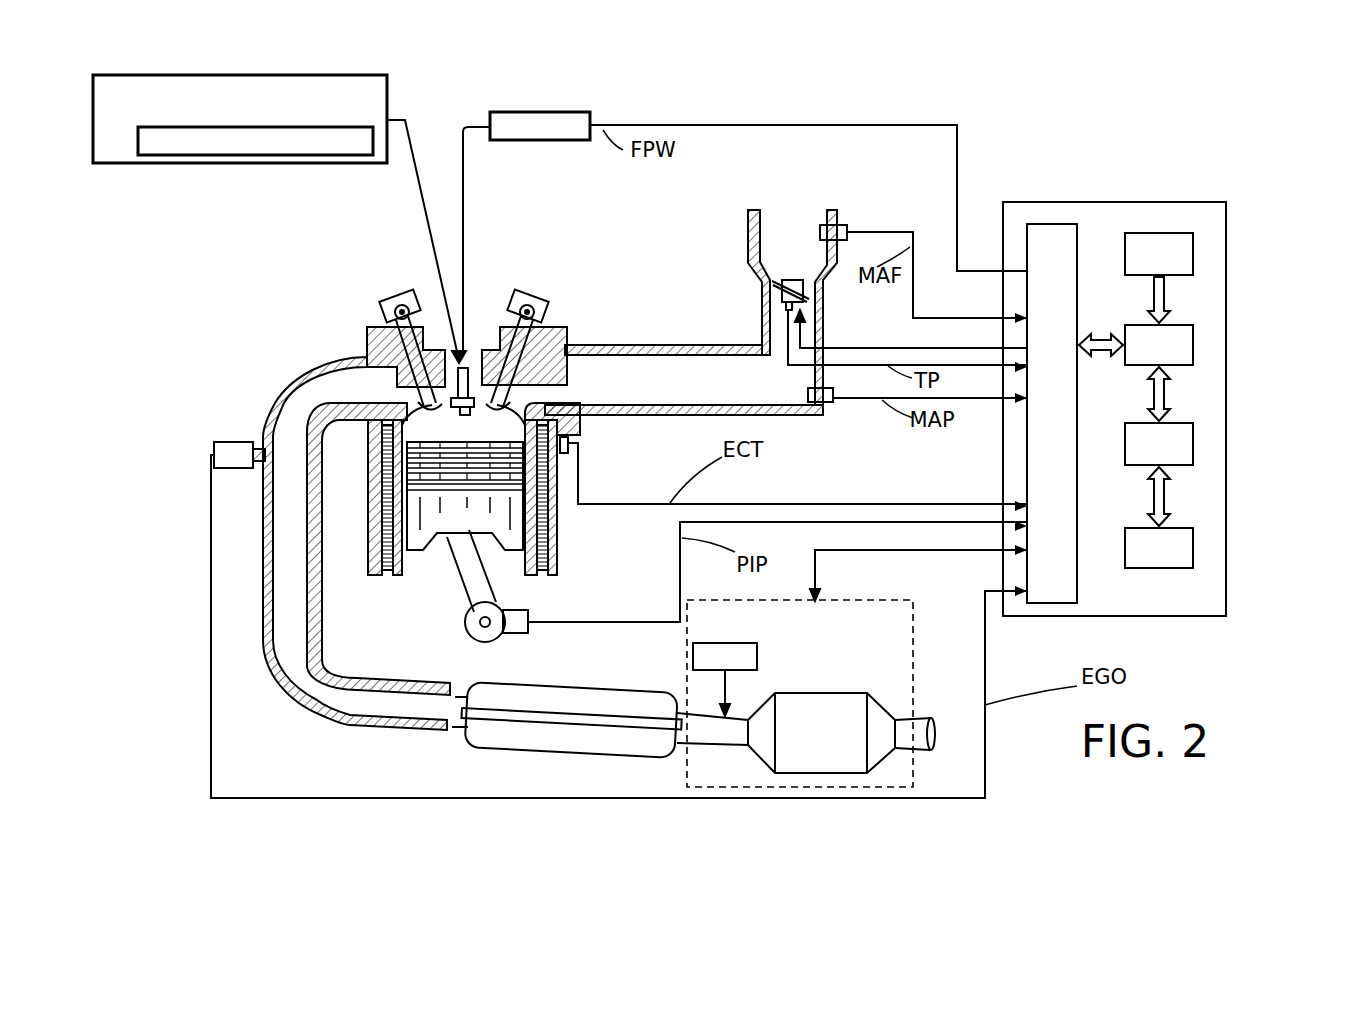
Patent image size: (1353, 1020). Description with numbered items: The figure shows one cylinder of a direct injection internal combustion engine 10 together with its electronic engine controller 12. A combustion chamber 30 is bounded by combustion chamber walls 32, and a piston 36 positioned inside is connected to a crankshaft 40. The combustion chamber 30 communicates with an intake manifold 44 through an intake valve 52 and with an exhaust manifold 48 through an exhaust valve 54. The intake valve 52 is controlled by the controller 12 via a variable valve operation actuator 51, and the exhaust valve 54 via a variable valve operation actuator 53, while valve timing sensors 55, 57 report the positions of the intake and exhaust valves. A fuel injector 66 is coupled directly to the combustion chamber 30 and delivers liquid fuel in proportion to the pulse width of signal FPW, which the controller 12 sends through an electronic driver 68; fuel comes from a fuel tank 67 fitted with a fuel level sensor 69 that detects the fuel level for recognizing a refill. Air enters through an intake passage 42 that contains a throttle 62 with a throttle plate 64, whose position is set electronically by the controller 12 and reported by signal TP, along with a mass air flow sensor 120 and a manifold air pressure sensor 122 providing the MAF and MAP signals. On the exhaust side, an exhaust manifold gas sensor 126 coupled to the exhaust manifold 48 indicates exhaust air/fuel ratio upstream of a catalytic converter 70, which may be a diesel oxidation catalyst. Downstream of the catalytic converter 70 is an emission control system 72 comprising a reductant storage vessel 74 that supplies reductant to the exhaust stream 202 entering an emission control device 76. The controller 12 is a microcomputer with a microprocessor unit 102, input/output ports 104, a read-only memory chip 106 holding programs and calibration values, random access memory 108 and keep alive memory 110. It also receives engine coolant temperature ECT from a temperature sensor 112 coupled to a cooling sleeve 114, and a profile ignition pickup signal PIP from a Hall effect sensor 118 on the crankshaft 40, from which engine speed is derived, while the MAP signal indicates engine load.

The direct injection internal combustion engine 10 is at (306, 285).
The electronic engine controller 12 is at (1226, 202).
The combustion chamber 30 is at (437, 427).
The combustion chamber walls 32 is at (408, 560).
The piston 36 is at (447, 522).
The crankshaft 40 is at (470, 640).
The intake passage 42 is at (773, 257).
The intake manifold 44 is at (718, 394).
The exhaust manifold 48 is at (325, 399).
The variable valve operation actuator 51 is at (520, 300).
The intake valve 52 is at (505, 393).
The variable valve operation actuator 53 is at (430, 295).
The exhaust valve 54 is at (377, 372).
The valve timing sensor 55 is at (542, 315).
The valve timing sensor 57 is at (387, 316).
The throttle 62 is at (797, 289).
The throttle plate 64 is at (775, 287).
The fuel injector 66 is at (467, 366).
The fuel tank 67 is at (345, 165).
The electronic driver 68 is at (565, 142).
The fuel level sensor 69 is at (138, 148).
The catalytic converter 70 is at (603, 683).
The emission control system 72 is at (852, 597).
The reductant storage vessel 74 is at (727, 643).
The emission control device 76 is at (847, 693).
The microprocessor unit 102 is at (1193, 338).
The input/output ports 104 is at (1079, 232).
The read-only memory chip 106 is at (1193, 250).
The random access memory 108 is at (1193, 442).
The keep alive memory 110 is at (1193, 547).
The temperature sensor 112 is at (567, 452).
The cooling sleeve 114 is at (560, 527).
The Hall effect sensor 118 is at (520, 636).
The mass air flow sensor 120 is at (850, 222).
The manifold air pressure sensor 122 is at (822, 408).
The exhaust manifold gas sensor 126 is at (212, 444).
The exhaust stream 202 is at (696, 726).